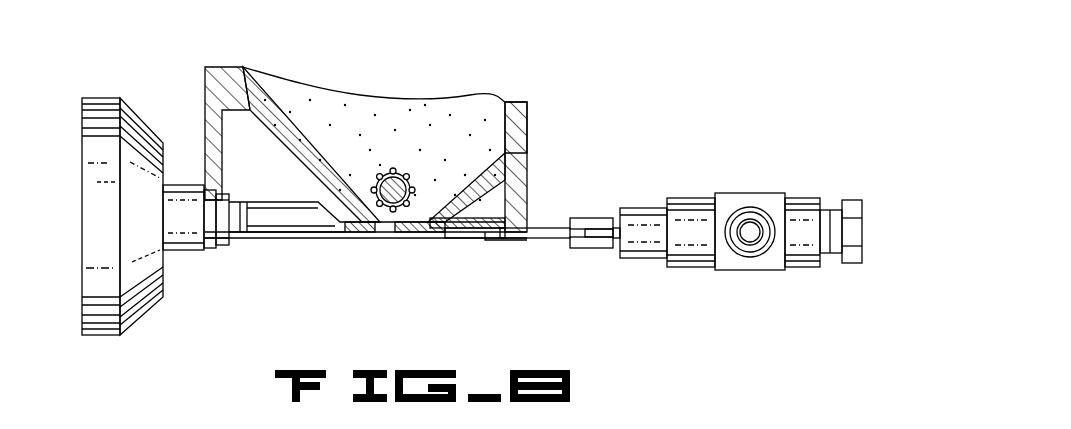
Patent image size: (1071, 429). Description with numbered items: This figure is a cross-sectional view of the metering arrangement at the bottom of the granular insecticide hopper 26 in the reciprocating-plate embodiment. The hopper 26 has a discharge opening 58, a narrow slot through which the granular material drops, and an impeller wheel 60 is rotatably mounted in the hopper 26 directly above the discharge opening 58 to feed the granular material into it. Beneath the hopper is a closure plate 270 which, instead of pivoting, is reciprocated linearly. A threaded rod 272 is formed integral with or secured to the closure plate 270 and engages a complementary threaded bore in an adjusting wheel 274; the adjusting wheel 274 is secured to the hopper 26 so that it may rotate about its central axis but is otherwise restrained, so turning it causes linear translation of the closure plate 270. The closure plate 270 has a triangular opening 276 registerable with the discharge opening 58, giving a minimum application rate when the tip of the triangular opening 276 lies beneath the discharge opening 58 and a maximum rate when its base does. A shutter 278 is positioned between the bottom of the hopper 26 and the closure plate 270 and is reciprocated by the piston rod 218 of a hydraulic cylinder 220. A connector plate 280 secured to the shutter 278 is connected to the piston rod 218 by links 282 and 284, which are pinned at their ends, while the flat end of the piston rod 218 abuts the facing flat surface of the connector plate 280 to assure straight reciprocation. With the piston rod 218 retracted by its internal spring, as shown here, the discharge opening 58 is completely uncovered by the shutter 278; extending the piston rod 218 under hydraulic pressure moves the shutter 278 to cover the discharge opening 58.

The granular insecticide hopper 26 is at (222, 70).
The discharge opening 58 is at (392, 234).
The impeller wheel 60 is at (398, 172).
The piston rod 218 is at (620, 215).
The hydraulic cylinder 220 is at (645, 262).
The closure plate 270 is at (345, 241).
The threaded rod 272 is at (268, 248).
The adjusting wheel 274 is at (98, 98).
The triangular opening 276 is at (440, 243).
The shutter 278 is at (476, 243).
The connector plate 280 is at (548, 227).
The link 282 is at (585, 250).
The link 284 is at (600, 220).